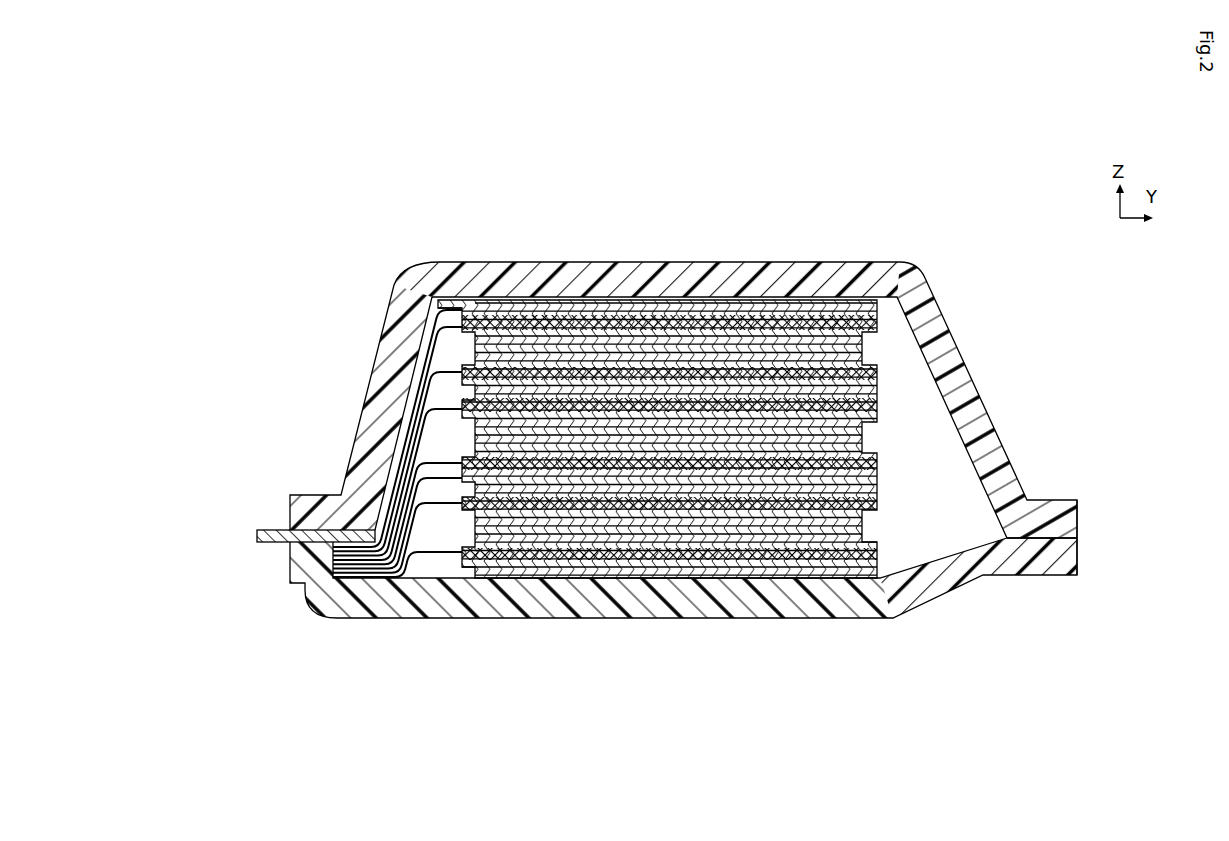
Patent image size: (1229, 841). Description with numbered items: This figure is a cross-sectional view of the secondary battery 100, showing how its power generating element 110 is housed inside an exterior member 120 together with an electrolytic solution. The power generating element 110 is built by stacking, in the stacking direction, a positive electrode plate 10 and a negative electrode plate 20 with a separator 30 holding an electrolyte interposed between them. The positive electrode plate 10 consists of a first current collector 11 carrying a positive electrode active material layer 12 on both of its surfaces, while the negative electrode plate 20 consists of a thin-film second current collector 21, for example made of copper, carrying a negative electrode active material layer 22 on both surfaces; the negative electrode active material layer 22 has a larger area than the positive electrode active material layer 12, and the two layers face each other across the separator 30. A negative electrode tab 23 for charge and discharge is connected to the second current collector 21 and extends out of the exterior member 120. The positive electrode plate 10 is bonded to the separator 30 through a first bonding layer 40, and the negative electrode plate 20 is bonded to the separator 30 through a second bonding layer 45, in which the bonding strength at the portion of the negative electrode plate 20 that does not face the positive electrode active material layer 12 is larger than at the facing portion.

The secondary battery 100 is at (152, 104).
The positive electrode plate 10 is at (679, 378).
The first current collector 11 is at (741, 345).
The positive electrode active material layer 12 is at (696, 320).
The negative electrode plate 20 is at (683, 484).
The second current collector 21 is at (528, 605).
The negative electrode active material layer 22 is at (595, 668).
The negative electrode tab 23 is at (272, 530).
The separator 30 is at (570, 302).
The first bonding layer 40 is at (864, 531).
The second bonding layer 45 is at (880, 492).
The power generating element 110 is at (683, 484).
The exterior member 120 is at (1067, 558).